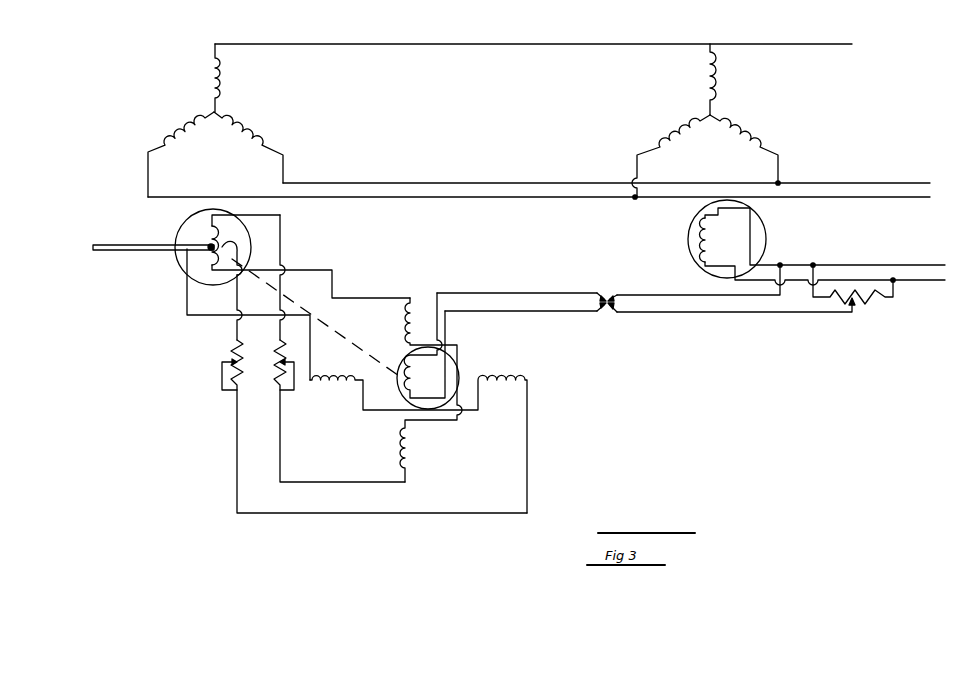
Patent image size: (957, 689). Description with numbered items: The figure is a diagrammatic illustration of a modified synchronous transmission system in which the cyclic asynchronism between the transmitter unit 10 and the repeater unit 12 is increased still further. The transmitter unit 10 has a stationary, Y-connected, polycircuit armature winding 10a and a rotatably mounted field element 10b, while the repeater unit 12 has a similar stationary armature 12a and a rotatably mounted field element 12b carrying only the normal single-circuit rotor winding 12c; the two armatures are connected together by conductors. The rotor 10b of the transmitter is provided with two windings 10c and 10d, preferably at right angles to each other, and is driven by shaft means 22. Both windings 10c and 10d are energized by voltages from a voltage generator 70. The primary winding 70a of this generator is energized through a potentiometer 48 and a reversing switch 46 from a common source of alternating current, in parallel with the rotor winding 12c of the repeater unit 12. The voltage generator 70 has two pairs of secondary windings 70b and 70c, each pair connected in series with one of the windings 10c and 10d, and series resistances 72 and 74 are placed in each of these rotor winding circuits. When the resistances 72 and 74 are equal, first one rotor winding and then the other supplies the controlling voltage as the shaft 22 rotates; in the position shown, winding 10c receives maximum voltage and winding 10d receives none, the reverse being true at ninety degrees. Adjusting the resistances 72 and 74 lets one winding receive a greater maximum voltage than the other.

The transmitter unit 10 is at (225, 120).
The armature winding 10a is at (228, 122).
The field element 10b is at (276, 294).
The single-circuit field winding 10c is at (207, 232).
The second field winding 10d is at (208, 252).
The repeater unit 12 is at (722, 121).
The armature 12a is at (712, 92).
The field element 12b is at (794, 242).
The rotor winding 12c is at (700, 246).
The shaft means 22 is at (118, 245).
The reversing switch 46 is at (609, 309).
The potentiometer 48 is at (860, 301).
The voltage generator 70 is at (418, 403).
The primary winding 70a is at (405, 367).
The secondary windings 70b is at (348, 386).
The secondary windings 70c is at (402, 316).
The series resistance 72 is at (232, 343).
The series resistance 74 is at (277, 355).